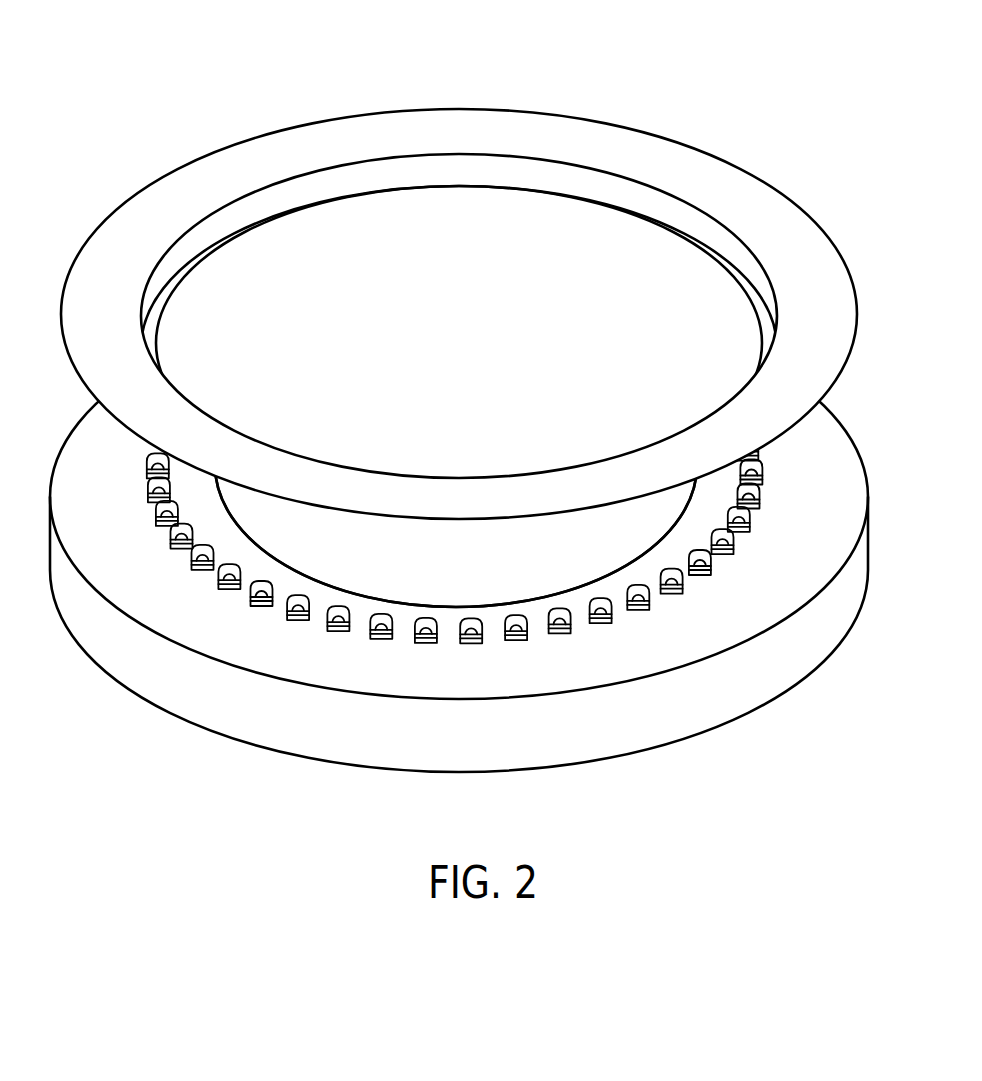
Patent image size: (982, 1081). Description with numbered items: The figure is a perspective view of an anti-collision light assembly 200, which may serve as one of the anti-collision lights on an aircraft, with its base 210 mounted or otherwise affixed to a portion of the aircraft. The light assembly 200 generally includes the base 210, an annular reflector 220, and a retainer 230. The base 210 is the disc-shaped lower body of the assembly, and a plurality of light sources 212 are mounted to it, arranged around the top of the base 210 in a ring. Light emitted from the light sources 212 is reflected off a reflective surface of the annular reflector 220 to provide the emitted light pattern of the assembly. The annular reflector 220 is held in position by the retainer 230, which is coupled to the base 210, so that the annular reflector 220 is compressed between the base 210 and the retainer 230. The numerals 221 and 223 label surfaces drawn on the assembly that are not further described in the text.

The light assembly 200 is at (459, 418).
The base 210 is at (777, 570).
The light sources 212 is at (673, 592).
The annular reflector 220 is at (343, 137).
The first surface of optical element 221 is at (323, 540).
The second surface of optical element 223 is at (403, 628).
The retainer 230 is at (653, 287).